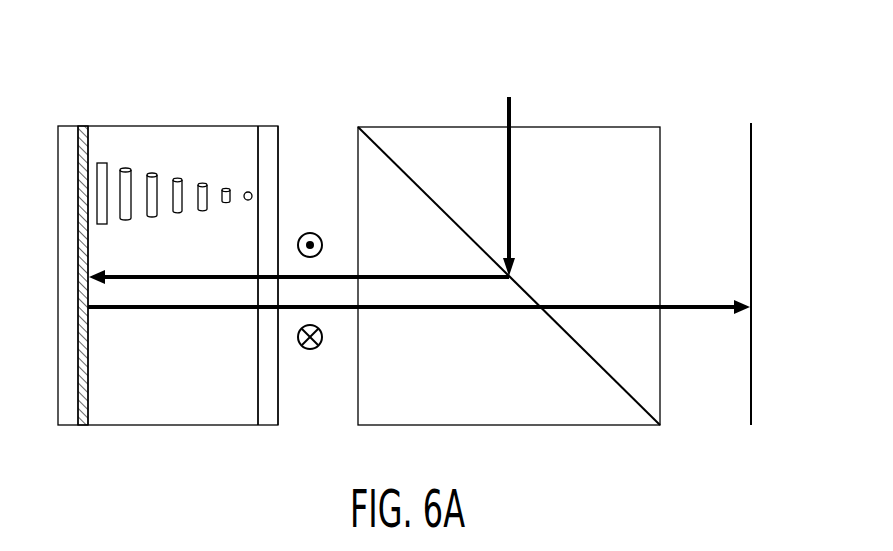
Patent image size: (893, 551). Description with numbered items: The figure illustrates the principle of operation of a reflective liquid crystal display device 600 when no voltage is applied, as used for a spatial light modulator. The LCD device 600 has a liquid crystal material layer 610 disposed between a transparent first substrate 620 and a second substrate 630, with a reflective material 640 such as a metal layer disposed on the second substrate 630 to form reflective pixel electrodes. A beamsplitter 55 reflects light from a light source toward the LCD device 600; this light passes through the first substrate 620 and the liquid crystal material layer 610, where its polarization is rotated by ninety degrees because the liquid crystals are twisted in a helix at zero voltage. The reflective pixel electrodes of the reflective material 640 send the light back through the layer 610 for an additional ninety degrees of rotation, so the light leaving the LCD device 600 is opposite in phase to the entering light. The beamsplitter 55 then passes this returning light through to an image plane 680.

The reflective liquid crystal display (LCD) device 600 is at (161, 214).
The liquid crystal material layer 610 is at (208, 126).
The first substrate 620 is at (268, 126).
The second substrate 630 is at (68, 126).
The reflective material 640 is at (83, 126).
The beamsplitter 55 is at (450, 115).
The image plane 680 is at (751, 122).